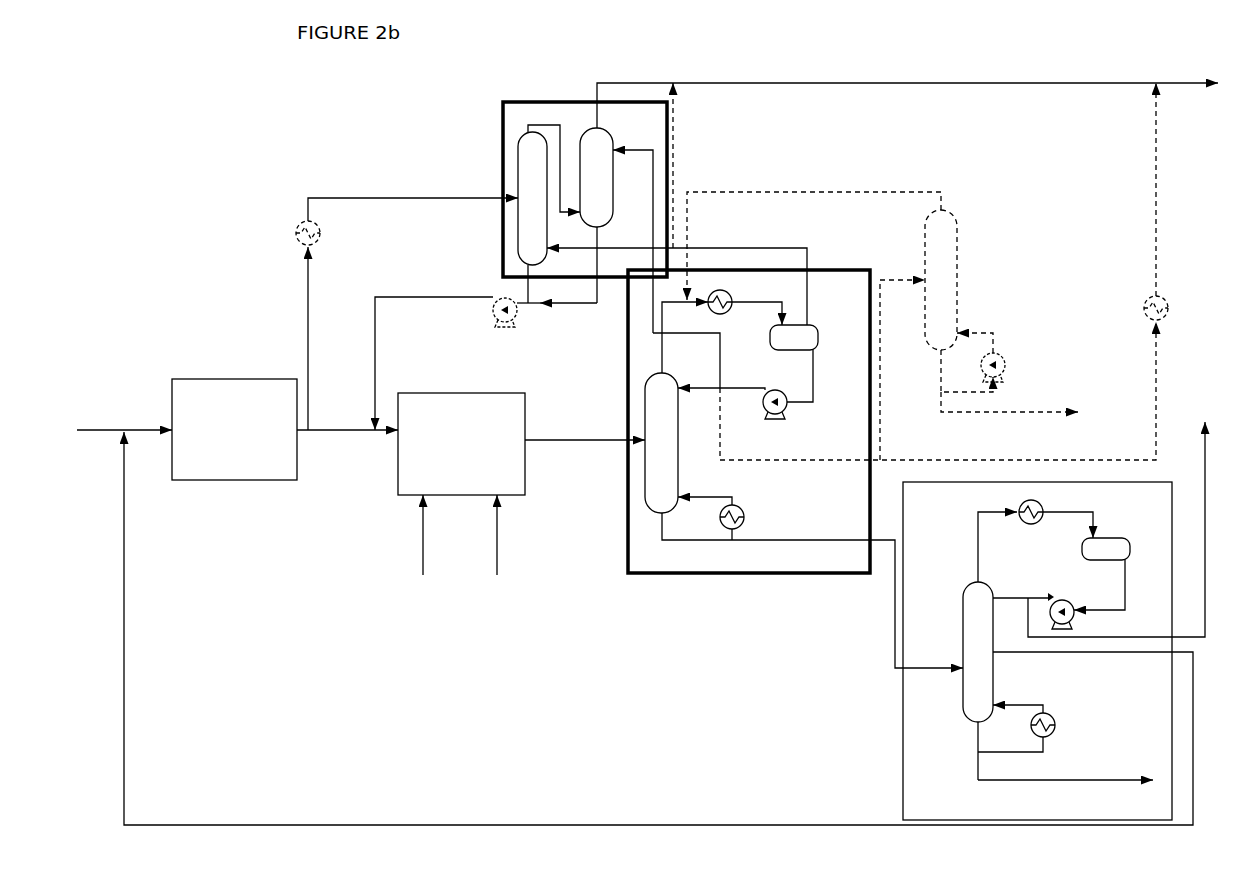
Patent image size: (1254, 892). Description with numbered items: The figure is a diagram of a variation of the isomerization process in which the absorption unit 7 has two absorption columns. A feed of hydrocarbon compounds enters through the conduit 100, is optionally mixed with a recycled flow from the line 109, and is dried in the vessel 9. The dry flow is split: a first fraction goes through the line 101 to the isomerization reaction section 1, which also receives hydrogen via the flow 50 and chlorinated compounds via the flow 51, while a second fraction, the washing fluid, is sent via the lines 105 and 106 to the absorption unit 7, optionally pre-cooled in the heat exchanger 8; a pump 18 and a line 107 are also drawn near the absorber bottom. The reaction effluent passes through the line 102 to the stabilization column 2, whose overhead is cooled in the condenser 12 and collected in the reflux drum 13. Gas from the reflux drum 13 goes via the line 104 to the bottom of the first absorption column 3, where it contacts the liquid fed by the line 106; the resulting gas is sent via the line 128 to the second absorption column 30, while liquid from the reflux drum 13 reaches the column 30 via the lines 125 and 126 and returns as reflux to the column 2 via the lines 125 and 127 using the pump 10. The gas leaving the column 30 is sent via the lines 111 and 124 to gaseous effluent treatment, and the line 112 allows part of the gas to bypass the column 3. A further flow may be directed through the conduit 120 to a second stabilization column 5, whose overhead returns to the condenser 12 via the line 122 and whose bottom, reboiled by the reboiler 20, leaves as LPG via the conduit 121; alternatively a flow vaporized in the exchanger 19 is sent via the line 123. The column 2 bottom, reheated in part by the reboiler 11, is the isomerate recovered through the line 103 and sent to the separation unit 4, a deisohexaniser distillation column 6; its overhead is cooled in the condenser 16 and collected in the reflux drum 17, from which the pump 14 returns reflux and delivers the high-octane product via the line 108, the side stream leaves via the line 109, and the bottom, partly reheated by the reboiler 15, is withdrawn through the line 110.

The isomerization reaction section 1 is at (450, 393).
The stabilization column 2 is at (645, 472).
The absorption column 3 is at (518, 248).
The separation unit 4 is at (905, 712).
The second stabilization column 5 is at (957, 275).
The distillation column 6 is at (963, 720).
The absorption unit 7 is at (503, 121).
The heat exchanger 8 is at (298, 228).
The vessel 9 is at (222, 378).
The pump 10 is at (776, 419).
The reboiler 11 is at (744, 513).
The condenser 12 is at (729, 293).
The reflux drum 13 is at (818, 335).
The pump 14 is at (1075, 622).
The reboiler 15 is at (1055, 720).
The condenser 16 is at (1022, 502).
The reflux drum 17 is at (1133, 545).
The pump 18 is at (545, 325).
The exchanger 19 is at (1168, 300).
The reboiler 20 is at (628, 570).
The second absorption column 30 is at (614, 205).
The flow 50 is at (440, 535).
The flow 51 is at (514, 535).
The conduit 100 is at (124, 422).
The line 101 is at (347, 442).
The line 102 is at (585, 431).
The line 103 is at (812, 590).
The line 104 is at (677, 279).
The line 105 is at (327, 338).
The line 106 is at (413, 200).
The absorber bottoms recycle stream 107 is at (434, 356).
The line 108 is at (1116, 529).
The line 109 is at (658, 631).
The line 110 is at (1065, 771).
The line 111 is at (878, 97).
The line 112 is at (696, 165).
The conduit 120 is at (901, 360).
The conduit 121 is at (1013, 404).
The line 122 is at (814, 235).
The line 123 is at (1143, 189).
The line 124 is at (1189, 74).
The line 125 is at (818, 378).
The line 126 is at (635, 232).
The line 127 is at (721, 403).
The line 128 is at (554, 160).